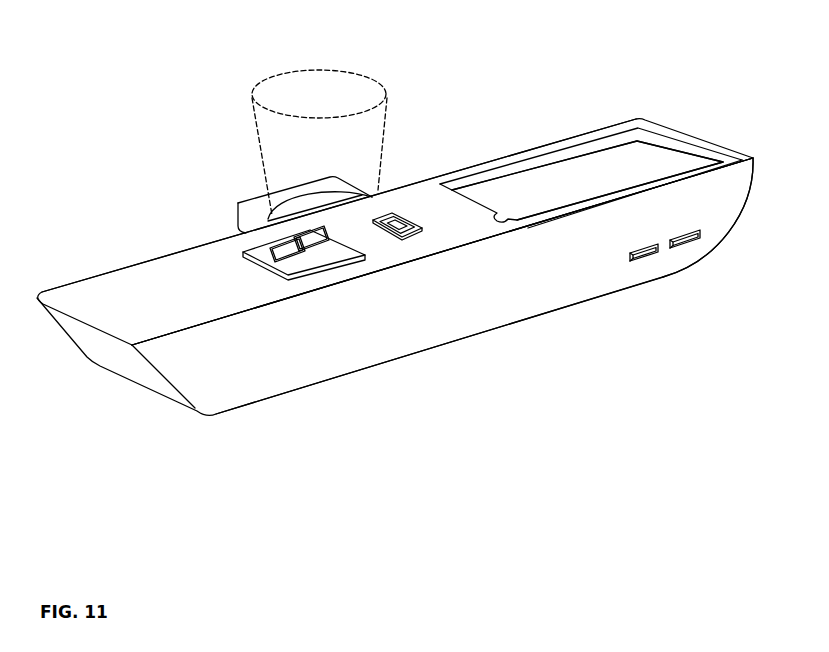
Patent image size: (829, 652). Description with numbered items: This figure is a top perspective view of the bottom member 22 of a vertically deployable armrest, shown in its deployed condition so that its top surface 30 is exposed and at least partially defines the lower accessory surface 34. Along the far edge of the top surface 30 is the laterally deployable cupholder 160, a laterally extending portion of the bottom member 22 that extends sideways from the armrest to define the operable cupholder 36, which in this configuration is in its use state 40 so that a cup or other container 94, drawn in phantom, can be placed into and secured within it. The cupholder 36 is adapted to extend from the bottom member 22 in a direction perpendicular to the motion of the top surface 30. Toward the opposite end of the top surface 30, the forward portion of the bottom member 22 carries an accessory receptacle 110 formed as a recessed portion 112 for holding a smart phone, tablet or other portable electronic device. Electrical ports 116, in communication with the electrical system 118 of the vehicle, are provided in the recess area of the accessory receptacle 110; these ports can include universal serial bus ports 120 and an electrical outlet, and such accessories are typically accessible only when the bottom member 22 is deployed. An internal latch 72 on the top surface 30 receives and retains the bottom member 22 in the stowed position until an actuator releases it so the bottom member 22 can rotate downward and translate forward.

The bottom member 22 is at (258, 366).
The top surface 30 is at (158, 311).
The lower accessory surface 34 is at (421, 203).
The operable cupholder 36 is at (205, 228).
The use state 40 is at (399, 129).
The internal latch 72 is at (422, 246).
The cup or other container 94 is at (302, 95).
The accessory receptacle 110 is at (583, 134).
The recessed portion 112 is at (642, 165).
The electrical port 116 is at (690, 243).
The electrical system 118 is at (565, 284).
The universal serial bus (USB) port 120 is at (645, 261).
The laterally deployable cupholder 160 is at (228, 203).